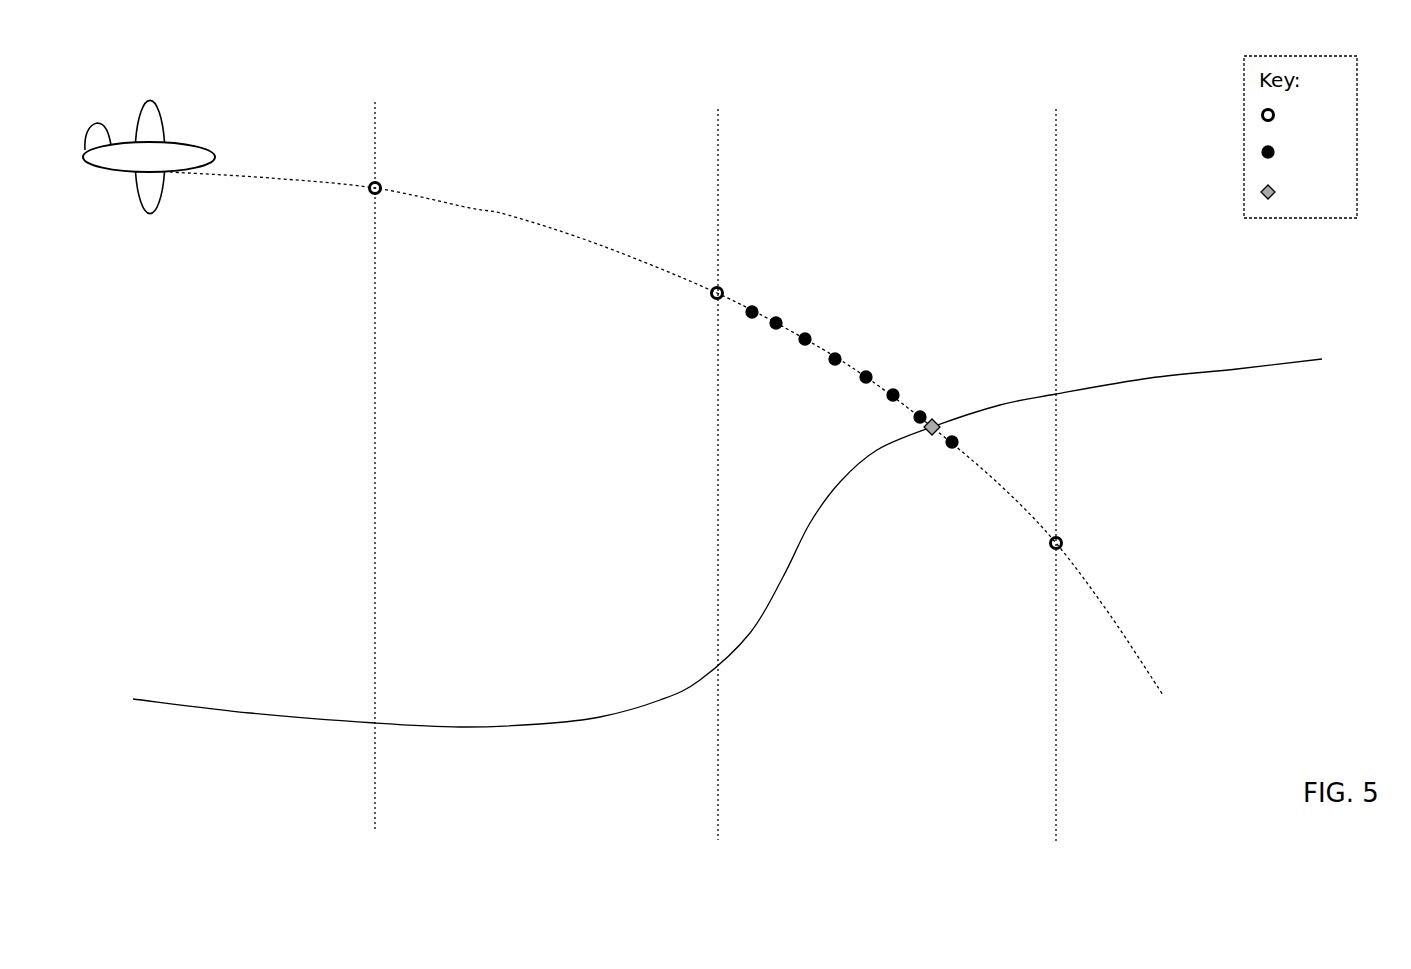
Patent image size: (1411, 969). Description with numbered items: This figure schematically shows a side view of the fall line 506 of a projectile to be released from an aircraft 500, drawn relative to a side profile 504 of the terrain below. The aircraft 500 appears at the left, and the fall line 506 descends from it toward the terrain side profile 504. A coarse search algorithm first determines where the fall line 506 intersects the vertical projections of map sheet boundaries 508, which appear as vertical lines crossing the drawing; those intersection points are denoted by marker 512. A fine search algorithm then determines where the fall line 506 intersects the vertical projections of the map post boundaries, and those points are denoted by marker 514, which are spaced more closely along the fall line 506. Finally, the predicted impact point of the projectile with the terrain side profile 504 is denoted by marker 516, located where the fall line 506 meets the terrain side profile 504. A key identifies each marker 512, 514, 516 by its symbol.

The aircraft 500 is at (196, 145).
The terrain side profile 504 is at (1237, 369).
The fall line 506 is at (508, 215).
The vertical projections of map sheet boundaries 508 is at (375, 125).
The marker 512 is at (853, 327).
The marker 514 is at (1041, 295).
The marker 516 is at (1130, 308).